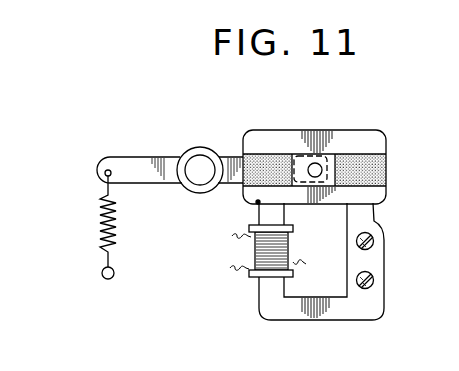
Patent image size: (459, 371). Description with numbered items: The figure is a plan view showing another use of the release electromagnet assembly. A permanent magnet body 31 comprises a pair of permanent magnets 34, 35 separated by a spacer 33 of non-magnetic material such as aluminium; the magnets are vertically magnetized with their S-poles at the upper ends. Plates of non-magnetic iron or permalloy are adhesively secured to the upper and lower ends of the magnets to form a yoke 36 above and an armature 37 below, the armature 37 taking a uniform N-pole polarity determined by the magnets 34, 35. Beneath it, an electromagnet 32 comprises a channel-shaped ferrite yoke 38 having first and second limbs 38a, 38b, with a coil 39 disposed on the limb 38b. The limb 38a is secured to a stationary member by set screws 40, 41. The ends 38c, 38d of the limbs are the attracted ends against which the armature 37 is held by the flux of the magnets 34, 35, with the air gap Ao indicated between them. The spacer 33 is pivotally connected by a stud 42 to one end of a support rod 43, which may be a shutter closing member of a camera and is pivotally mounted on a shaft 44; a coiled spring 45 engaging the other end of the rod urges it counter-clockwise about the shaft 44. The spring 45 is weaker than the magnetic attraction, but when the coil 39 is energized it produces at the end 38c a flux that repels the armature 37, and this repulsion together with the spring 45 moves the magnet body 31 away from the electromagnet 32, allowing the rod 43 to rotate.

The permanent magnet body 31 is at (391, 125).
The electromagnet 32 is at (253, 296).
The spacer 33 is at (320, 155).
The permanent magnet 34 is at (245, 163).
The permanent magnet 35 is at (386, 165).
The yoke 36 is at (268, 138).
The armature 37 is at (344, 206).
The channel-shaped yoke 38 is at (313, 320).
The first limb 38a is at (370, 262).
The second limb 38b is at (250, 222).
The attracted end 38c is at (370, 201).
The attracted end 38d is at (269, 197).
The coil 39 is at (290, 262).
The set screw 40 is at (374, 243).
The set screw 41 is at (375, 283).
The stud 42 is at (326, 168).
The support rod 43 is at (166, 160).
The shaft 44 is at (193, 181).
The coiled spring 45 is at (112, 232).
The air gap Ao is at (259, 203).